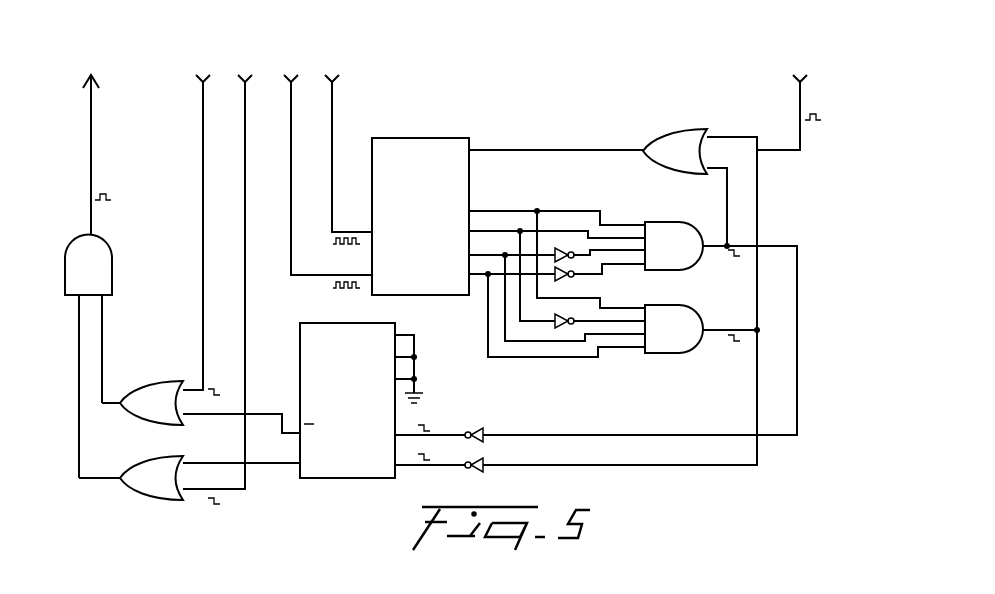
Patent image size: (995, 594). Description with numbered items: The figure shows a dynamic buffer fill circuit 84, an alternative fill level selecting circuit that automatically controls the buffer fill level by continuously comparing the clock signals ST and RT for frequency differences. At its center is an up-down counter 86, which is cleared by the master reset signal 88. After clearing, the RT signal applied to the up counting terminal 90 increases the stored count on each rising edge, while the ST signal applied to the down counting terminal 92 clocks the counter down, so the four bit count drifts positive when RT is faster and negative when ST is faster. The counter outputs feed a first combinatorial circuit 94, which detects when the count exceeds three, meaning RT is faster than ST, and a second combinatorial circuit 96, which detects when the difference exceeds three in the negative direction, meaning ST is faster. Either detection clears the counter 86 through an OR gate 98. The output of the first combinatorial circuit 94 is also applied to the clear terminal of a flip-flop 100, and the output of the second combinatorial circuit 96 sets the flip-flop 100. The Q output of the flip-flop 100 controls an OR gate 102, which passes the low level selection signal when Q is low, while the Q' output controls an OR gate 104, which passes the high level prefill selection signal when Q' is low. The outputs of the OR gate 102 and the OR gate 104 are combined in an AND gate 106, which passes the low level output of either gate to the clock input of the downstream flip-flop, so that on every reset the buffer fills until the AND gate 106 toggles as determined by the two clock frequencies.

The dynamic buffer fill circuit 84 is at (549, 110).
The up-down counter 86 is at (410, 145).
The master reset signal 88 is at (800, 100).
The up counting terminal 90 is at (345, 229).
The down counting terminal 92 is at (334, 274).
The first combinatorial circuit 94 is at (641, 214).
The second combinatorial circuit 96 is at (636, 370).
The OR gate 98 is at (683, 133).
The flip-flop 100 is at (330, 338).
The OR gate 102 is at (159, 488).
The OR gate 104 is at (152, 392).
The AND gate 106 is at (100, 256).